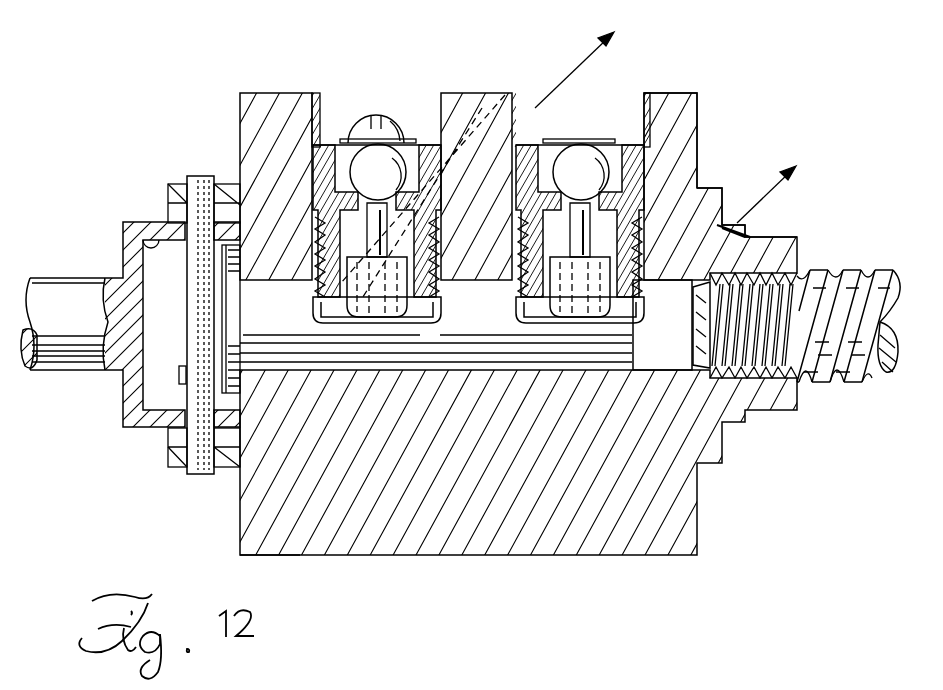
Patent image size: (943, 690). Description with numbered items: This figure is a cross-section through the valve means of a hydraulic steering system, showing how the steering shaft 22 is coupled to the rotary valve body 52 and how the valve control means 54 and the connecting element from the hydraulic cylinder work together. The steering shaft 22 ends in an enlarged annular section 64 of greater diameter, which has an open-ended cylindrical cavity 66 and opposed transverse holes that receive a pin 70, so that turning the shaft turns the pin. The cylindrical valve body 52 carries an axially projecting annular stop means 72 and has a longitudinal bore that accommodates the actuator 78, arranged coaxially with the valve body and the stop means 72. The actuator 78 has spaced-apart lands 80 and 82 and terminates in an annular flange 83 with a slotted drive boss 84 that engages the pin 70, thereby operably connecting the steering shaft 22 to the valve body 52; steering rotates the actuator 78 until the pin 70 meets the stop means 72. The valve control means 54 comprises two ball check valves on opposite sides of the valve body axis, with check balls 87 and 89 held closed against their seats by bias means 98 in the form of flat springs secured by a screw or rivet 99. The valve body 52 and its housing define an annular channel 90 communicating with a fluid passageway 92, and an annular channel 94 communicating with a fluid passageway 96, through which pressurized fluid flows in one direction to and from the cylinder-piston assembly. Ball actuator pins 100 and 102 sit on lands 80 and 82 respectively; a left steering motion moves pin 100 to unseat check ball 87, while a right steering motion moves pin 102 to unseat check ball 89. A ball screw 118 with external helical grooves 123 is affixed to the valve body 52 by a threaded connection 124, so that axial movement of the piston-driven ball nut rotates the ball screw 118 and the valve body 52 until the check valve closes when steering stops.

The steering shaft 22 is at (68, 373).
The rotary valve body 52 is at (683, 507).
The valve control means 54 is at (355, 92).
The enlarged annular section 64 is at (132, 430).
The cylindrical bore or cavity 66 is at (143, 243).
The pin 70 is at (200, 472).
The stop means 72 is at (178, 186).
The actuator 78 is at (247, 562).
The land 80 is at (423, 318).
The land 82 is at (526, 332).
The annular flange 83 is at (216, 180).
The drive boss or lug 84 is at (179, 384).
The check ball 87 is at (400, 142).
The check ball 89 is at (645, 145).
The annular channel 90 is at (318, 95).
The fluid passageway 92 is at (503, 92).
The annular channel 94 is at (646, 105).
The fluid passageway 96 is at (724, 222).
The bias means 98 is at (352, 138).
The screw or rivet 99 is at (383, 116).
The ball actuator pin 100 is at (378, 233).
The ball actuator pin 102 is at (578, 237).
The ball screw 118 is at (862, 386).
The external helical grooves 123 is at (868, 268).
The threaded connection 124 is at (800, 276).